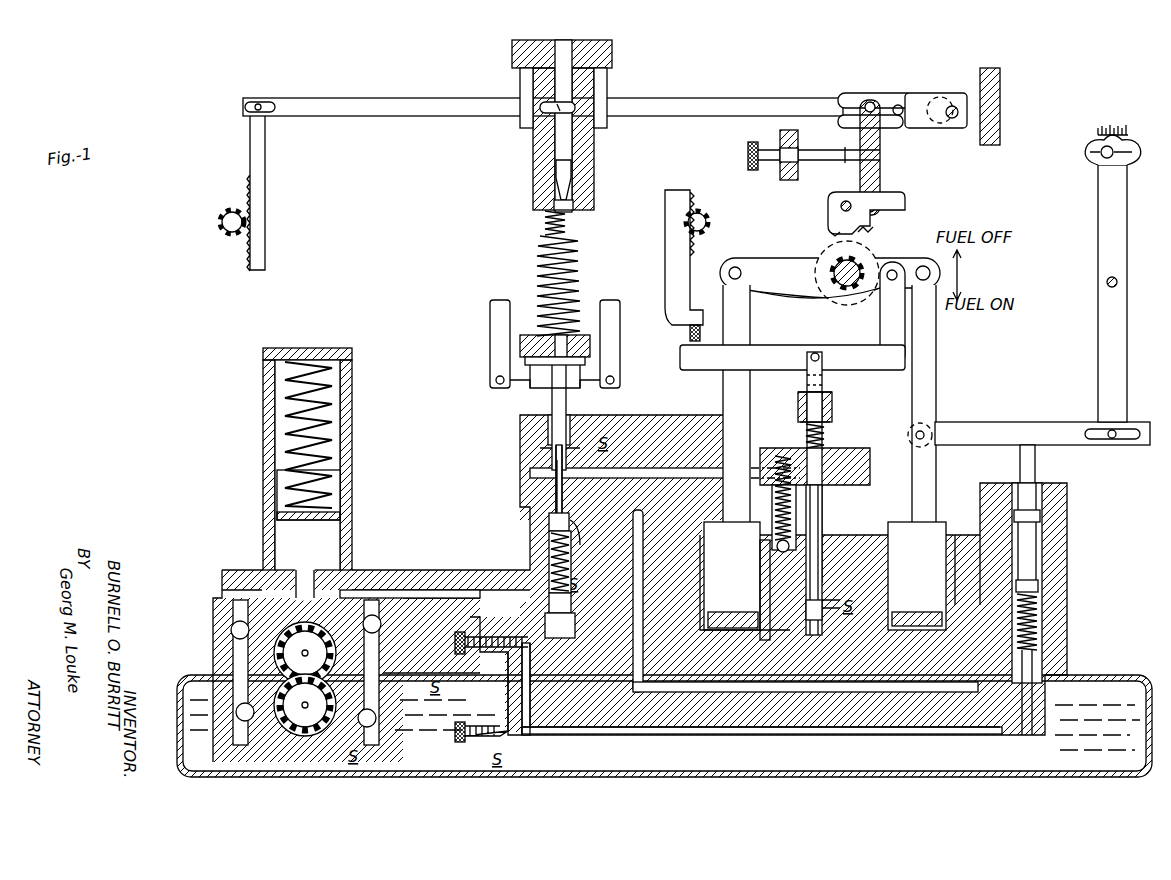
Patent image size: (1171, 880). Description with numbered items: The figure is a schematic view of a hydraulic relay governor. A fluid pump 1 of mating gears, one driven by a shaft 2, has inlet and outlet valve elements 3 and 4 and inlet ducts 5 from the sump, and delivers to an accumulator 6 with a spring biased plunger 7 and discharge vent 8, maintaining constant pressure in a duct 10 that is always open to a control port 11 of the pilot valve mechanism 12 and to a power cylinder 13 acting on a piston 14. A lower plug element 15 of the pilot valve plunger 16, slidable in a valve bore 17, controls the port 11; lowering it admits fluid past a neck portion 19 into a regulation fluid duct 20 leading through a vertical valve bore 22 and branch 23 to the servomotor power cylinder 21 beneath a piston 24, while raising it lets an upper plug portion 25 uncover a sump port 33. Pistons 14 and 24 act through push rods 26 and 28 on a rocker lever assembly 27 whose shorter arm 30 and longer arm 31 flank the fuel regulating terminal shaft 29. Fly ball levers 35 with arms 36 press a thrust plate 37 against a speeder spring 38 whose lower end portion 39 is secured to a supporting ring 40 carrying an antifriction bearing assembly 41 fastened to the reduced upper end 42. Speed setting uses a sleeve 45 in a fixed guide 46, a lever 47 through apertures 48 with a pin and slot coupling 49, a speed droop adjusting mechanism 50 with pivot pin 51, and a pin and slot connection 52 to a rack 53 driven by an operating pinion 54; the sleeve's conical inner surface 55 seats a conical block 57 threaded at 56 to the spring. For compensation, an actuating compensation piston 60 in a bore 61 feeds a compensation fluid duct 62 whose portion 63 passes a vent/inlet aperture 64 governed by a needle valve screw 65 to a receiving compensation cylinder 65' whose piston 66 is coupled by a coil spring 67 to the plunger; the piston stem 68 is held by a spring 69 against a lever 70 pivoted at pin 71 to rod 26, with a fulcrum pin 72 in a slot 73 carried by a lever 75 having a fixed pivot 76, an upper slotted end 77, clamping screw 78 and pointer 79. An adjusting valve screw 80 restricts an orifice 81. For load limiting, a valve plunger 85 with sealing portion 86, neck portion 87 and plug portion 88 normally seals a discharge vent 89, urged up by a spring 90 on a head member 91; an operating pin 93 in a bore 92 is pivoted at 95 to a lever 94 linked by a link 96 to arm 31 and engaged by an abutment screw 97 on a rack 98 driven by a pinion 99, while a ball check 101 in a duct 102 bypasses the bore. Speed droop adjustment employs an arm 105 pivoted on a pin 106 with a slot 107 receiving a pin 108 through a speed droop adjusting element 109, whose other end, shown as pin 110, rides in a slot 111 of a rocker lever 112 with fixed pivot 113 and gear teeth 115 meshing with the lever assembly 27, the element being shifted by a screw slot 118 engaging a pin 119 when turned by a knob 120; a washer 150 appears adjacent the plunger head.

The fluid pump 1 is at (302, 656).
The shaft 2 is at (305, 712).
The inlet valve element 3 is at (306, 704).
The outlet valve element 4 is at (231, 630).
The inlet ducts 5 is at (250, 745).
The accumulator 6 is at (243, 468).
The spring biased plunger 7 is at (342, 480).
The discharge vent 8 is at (342, 515).
The duct 10 is at (432, 588).
The control port 11 is at (587, 537).
The control pilot valve mechanism 12 is at (458, 445).
The power cylinder 13 is at (946, 637).
The piston 14 is at (960, 605).
The lower plug element 15 is at (549, 524).
The pilot valve plunger 16 is at (558, 468).
The valve bore 17 is at (555, 485).
The neck portion 19 is at (555, 462).
The regulation fluid duct 20 is at (688, 470).
The servomotor power cylinder 21 is at (712, 635).
The vertical valve bore 22 is at (824, 516).
The branch 23 is at (770, 560).
The piston 24 is at (704, 617).
The upper plug portion 25 is at (572, 428).
The push rod 26 is at (911, 485).
The rocker lever assembly 27 is at (805, 294).
The push rod 28 is at (722, 408).
The fuel regulating terminal shaft 29 is at (845, 273).
The shorter arm 30 is at (935, 250).
The longer arm 31 is at (830, 278).
The port 33 is at (570, 445).
The fly ball levers 35 is at (556, 344).
The arms 36 is at (512, 386).
The thrust plate 37 is at (545, 390).
The speeder spring 38 is at (538, 255).
The lower end portion 39 is at (522, 345).
The supporting ring 40 is at (590, 347).
The antifriction bearing assembly 41 is at (525, 362).
The reduced upper end 42 is at (562, 330).
The sleeve 45 is at (533, 170).
The fixed guide 46 is at (592, 140).
The lever 47 is at (412, 108).
The apertures 48 is at (532, 125).
The pin and slot coupling 49 is at (552, 102).
The speed droop adjusting mechanism 50 is at (945, 140).
The pivot pin 51 is at (900, 104).
The pin and slot connection 52 is at (260, 100).
The rack 53 is at (268, 178).
The operating pinion 54 is at (224, 228).
The conical inner surface 55 is at (572, 196).
The threaded top end 56 is at (566, 226).
The conical block 57 is at (553, 205).
The actuating compensation piston 60 is at (1040, 585).
The bore 61 is at (1038, 558).
The compensation fluid duct 62 is at (1033, 692).
The duct portion 63 is at (507, 685).
The compensating vent/inlet aperture 64 is at (524, 736).
The needle valve screw 65 is at (481, 747).
The receiving compensation cylinder 65' is at (577, 629).
The receiving compensation piston 66 is at (565, 603).
The coil spring 67 is at (548, 565).
The stem 68 is at (1020, 460).
The spring 69 is at (1040, 615).
The lever 70 is at (998, 428).
The pivot pin 71 is at (915, 435).
The pin 72 is at (1110, 444).
The slot 73 is at (1141, 432).
The lever 75 is at (1127, 343).
The fixed pivot 76 is at (1106, 284).
The upper slotted end 77 is at (1140, 152).
The clamping screw 78 is at (1102, 156).
The pointer 79 is at (1129, 133).
The adjusting valve screw 80 is at (458, 642).
The orifice or passage 81 is at (540, 648).
The valve plunger 85 is at (823, 382).
The sealing portion 86 is at (826, 468).
The neck portion 87 is at (823, 537).
The plug portion 88 is at (824, 618).
The discharge vent 89 is at (836, 600).
The spring 90 is at (826, 432).
The head member 91 is at (800, 421).
The bore 92 is at (798, 404).
The operating pin 93 is at (833, 400).
The lever 94 is at (860, 340).
The pivotal connection 95 is at (815, 352).
The link 96 is at (882, 320).
The abutment screw 97 is at (690, 334).
The lever arm 98 is at (668, 228).
The pinion 99 is at (704, 214).
The ball check 101 is at (778, 542).
The duct 102 is at (772, 510).
The arm 105 is at (910, 128).
The pin 106 is at (953, 105).
The slot 107 is at (848, 93).
The pin 108 is at (871, 100).
The speed droop adjusting element 109 is at (880, 178).
The pin 110 is at (878, 200).
The slot 111 is at (905, 204).
The rocker lever 112 is at (870, 230).
The fixed pivot 113 is at (841, 206).
The gear teeth 115 is at (830, 232).
The screw slot 118 is at (770, 162).
The pin 119 is at (795, 145).
The knob 120 is at (748, 155).
The washer 150 is at (803, 398).